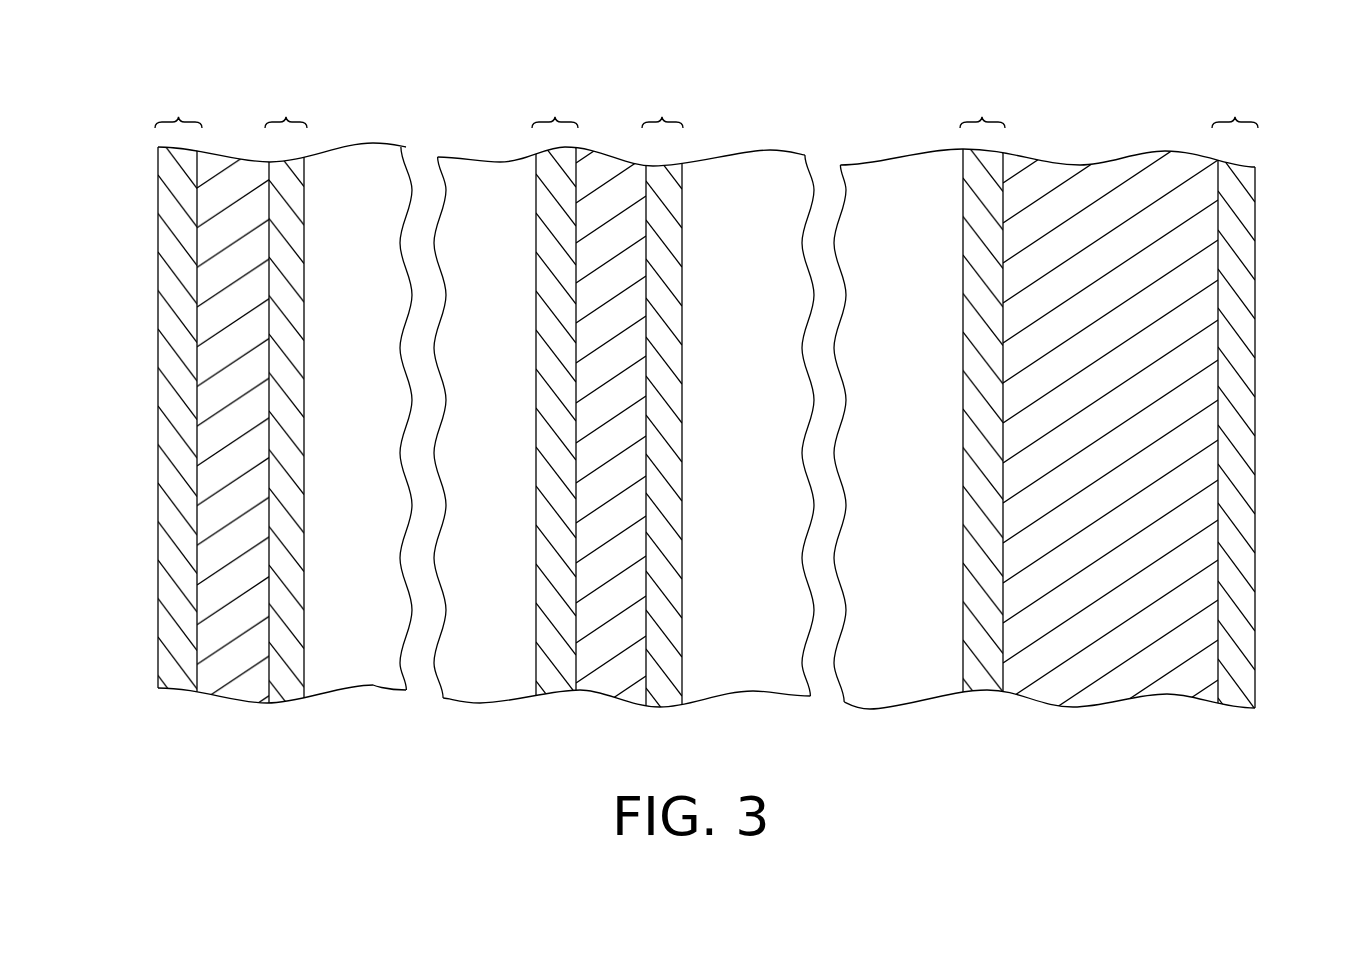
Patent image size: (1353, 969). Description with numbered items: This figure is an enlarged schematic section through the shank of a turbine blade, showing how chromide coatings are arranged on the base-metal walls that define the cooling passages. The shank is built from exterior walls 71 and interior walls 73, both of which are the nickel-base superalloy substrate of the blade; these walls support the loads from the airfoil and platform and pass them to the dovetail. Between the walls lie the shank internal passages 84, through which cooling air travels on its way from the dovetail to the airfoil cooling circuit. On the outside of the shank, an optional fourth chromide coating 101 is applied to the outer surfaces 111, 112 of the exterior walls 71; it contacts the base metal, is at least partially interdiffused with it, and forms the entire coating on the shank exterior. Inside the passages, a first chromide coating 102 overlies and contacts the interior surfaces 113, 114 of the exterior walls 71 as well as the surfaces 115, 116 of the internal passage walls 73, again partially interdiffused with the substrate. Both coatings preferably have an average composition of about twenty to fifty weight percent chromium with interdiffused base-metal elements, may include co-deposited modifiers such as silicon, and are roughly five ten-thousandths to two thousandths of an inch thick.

The fourth chromide coating 101 is at (178, 117).
The first chromide coating 102 is at (286, 117).
The shank internal passages 84 is at (478, 213).
The outer surface of exterior wall 112 is at (197, 660).
The shank exterior walls 71 is at (235, 665).
The interior surface of exterior wall 114 is at (270, 648).
The surface of internal passage wall 116 is at (573, 662).
The shank interior walls 73 is at (605, 678).
The surface of internal passage wall 115 is at (650, 667).
The interior surface of exterior wall 113 is at (1002, 663).
The outer surface of exterior wall 111 is at (1220, 672).